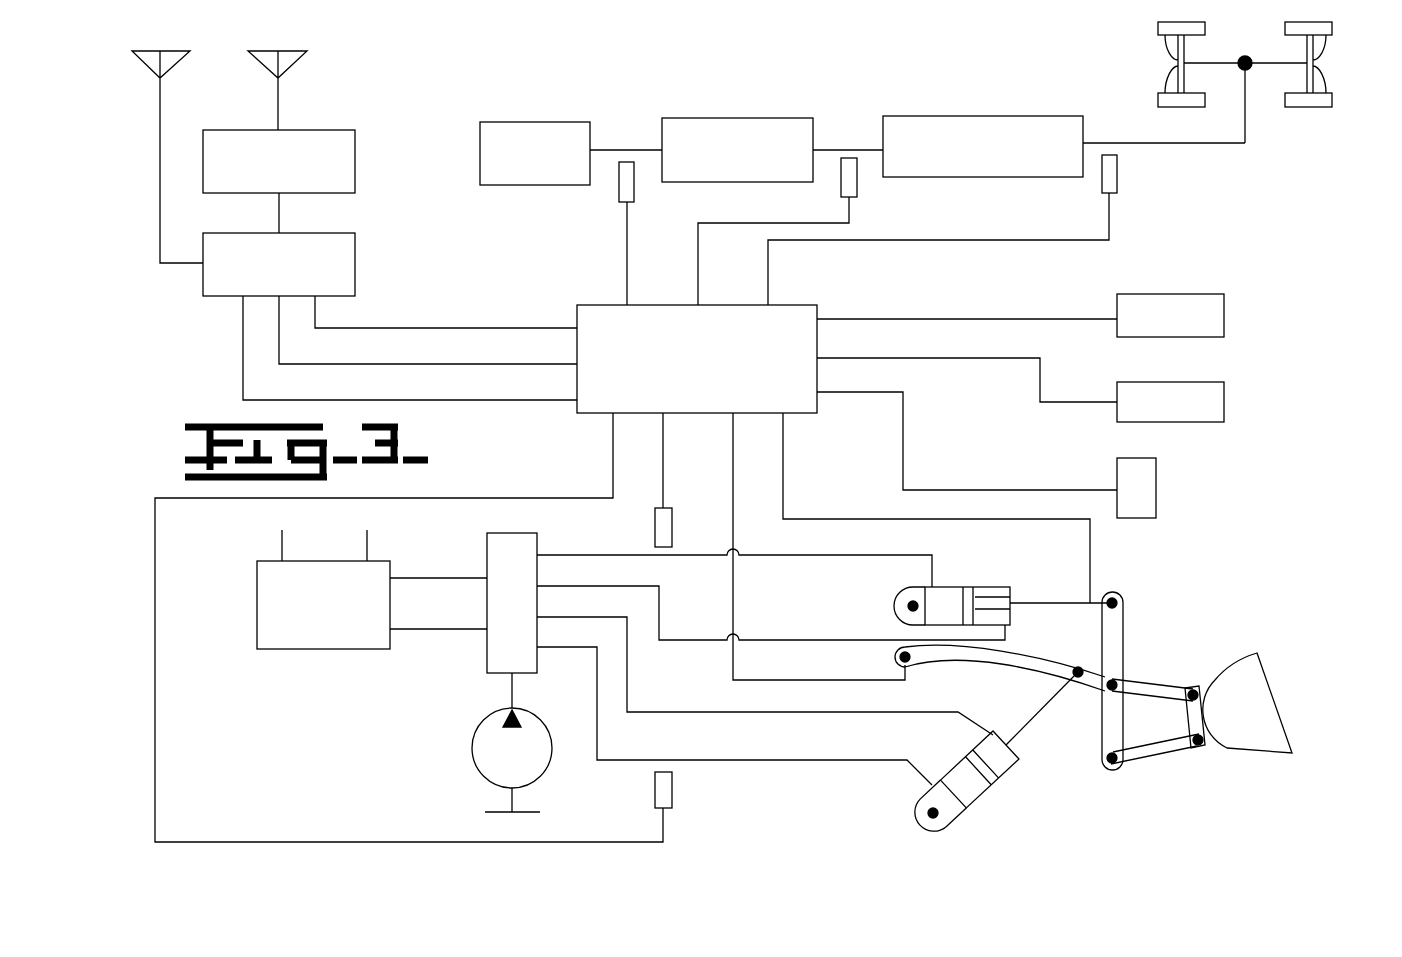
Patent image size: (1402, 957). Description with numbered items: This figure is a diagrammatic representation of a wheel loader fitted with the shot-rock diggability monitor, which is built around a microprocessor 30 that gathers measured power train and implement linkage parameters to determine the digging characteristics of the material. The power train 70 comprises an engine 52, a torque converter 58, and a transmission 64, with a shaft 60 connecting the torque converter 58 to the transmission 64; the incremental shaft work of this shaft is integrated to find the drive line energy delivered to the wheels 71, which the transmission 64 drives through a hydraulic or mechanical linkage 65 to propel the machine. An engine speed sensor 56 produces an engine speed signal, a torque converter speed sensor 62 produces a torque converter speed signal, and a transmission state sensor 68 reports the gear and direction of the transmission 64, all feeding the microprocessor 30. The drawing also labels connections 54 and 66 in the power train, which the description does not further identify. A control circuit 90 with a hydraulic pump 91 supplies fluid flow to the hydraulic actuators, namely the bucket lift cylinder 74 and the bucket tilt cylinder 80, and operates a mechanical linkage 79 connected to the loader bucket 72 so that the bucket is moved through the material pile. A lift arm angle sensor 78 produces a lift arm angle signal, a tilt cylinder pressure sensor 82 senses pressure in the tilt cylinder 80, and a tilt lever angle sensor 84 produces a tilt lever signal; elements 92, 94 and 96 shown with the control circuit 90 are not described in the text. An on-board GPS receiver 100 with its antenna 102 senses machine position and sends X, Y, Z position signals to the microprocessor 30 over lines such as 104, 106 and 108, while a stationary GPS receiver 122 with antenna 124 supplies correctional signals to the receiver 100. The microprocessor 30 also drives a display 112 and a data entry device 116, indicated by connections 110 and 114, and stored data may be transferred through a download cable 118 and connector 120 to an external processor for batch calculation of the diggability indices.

The microprocessor 30 is at (783, 305).
The engine 52 is at (505, 122).
The engine output shaft 54 is at (617, 148).
The engine speed sensor 56 is at (619, 192).
The torque converter 58 is at (742, 118).
The shaft 60 is at (851, 148).
The torque converter speed sensor 62 is at (857, 190).
The transmission 64 is at (1006, 116).
The hydraulic or mechanical linkage 65 is at (1245, 118).
The transmission output shaft 66 is at (1103, 143).
The transmission state sensor 68 is at (1117, 185).
The power train 70 is at (1208, 62).
The wheels 71 is at (1162, 56).
The loader bucket 72 is at (1225, 752).
The bucket lift cylinder 74 is at (965, 813).
The lift arm angle sensor 78 is at (905, 660).
The mechanical linkage 79 is at (1195, 652).
The bucket tilt cylinder 80 is at (945, 587).
The tilt cylinder pressure sensor 82 is at (655, 540).
The tilt lever angle sensor 84 is at (1123, 680).
The control circuit 90 is at (497, 615).
The hydraulic pump 91 is at (472, 722).
The pilot control valve 92 is at (320, 649).
The lift operator input 94 is at (282, 543).
The tilt operator input 96 is at (367, 540).
The GPS receiver 100 is at (355, 260).
The antenna 102 is at (172, 63).
The GPS receiver output line 104 is at (462, 328).
The GPS receiver output line 106 is at (411, 364).
The GPS receiver output line 108 is at (362, 400).
The display signal line 110 is at (925, 319).
The display 112 is at (1224, 313).
The keypad signal line 114 is at (1040, 378).
The data entry device 116 is at (1224, 400).
The download cable 118 is at (903, 455).
The connector 120 is at (1156, 488).
The Global Positioning System receiver 122 is at (355, 157).
The antenna 124 is at (290, 63).